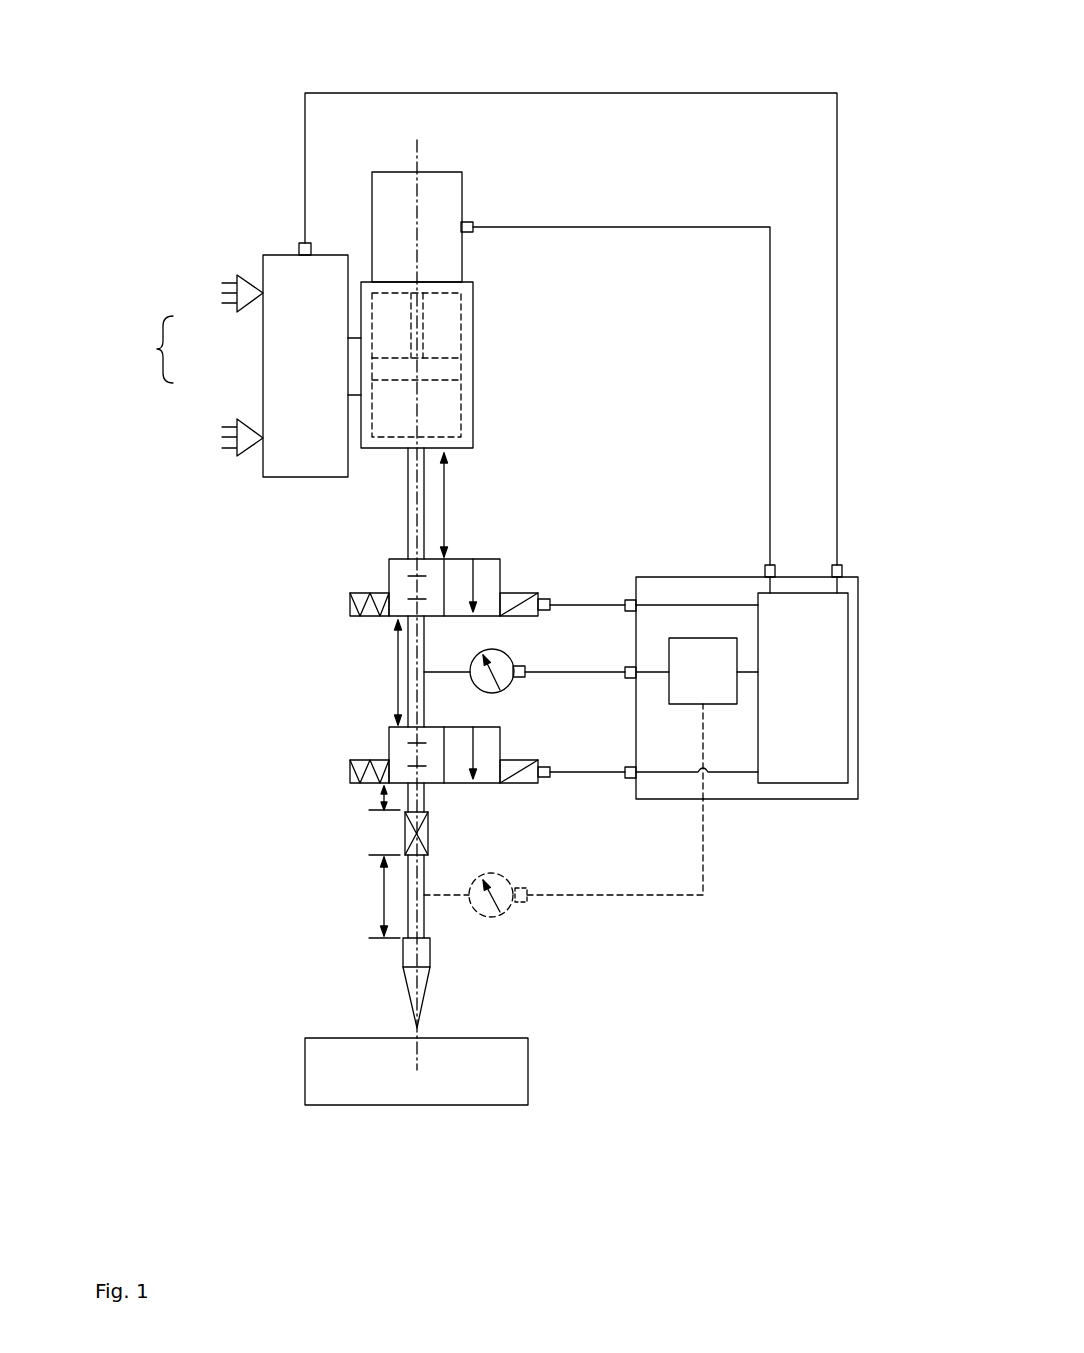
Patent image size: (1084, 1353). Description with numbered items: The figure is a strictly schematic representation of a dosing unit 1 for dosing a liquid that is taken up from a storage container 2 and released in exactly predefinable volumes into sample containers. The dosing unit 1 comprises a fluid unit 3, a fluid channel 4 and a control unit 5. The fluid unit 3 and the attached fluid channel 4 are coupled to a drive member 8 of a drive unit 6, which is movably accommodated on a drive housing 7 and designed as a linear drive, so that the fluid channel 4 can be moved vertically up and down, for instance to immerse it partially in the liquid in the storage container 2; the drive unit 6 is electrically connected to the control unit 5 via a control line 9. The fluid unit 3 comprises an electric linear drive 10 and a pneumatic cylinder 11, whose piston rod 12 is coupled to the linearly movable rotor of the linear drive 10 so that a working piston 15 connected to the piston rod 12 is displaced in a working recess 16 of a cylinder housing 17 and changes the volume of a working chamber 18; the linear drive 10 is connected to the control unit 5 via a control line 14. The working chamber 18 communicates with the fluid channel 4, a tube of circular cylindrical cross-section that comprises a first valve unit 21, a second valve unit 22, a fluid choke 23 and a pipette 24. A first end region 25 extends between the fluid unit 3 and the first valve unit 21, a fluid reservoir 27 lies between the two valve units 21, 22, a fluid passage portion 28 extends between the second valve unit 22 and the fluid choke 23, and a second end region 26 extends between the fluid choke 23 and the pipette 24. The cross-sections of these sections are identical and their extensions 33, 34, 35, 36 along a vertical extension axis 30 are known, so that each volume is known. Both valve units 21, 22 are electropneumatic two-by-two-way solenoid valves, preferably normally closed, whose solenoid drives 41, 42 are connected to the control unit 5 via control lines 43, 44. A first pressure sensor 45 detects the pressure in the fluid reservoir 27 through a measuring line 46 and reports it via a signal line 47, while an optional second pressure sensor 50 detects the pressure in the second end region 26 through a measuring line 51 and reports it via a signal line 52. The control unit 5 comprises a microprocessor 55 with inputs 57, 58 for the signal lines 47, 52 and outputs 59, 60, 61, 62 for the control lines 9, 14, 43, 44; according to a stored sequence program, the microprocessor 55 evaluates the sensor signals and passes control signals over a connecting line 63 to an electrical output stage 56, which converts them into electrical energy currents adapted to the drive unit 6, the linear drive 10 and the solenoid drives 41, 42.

The dosing unit 1 is at (268, 80).
The storage container 2 is at (512, 1082).
The fluid unit 3 is at (487, 265).
The fluid channel 4 is at (478, 525).
The control unit 5 is at (700, 577).
The drive unit 6 is at (155, 349).
The drive housing 7 is at (270, 358).
The drive member 8 is at (354, 350).
The control line 9 is at (702, 93).
The electric linear drive 10 is at (446, 185).
The pneumatic cylinder 11 is at (480, 365).
The piston rod 12 is at (413, 325).
The control line 14 is at (603, 227).
The working piston 15 is at (400, 368).
The working recess 16 is at (385, 418).
The cylinder housing 17 is at (465, 323).
The working chamber 18 is at (440, 412).
The first valve unit 21 is at (379, 575).
The second valve unit 22 is at (379, 742).
The fluid choke 23 is at (410, 833).
The pipette 24 is at (408, 958).
The first end region 25 is at (413, 487).
The second end region 26 is at (415, 912).
The fluid reservoir 27 is at (415, 638).
The fluid passage portion 28 is at (402, 800).
The extension axis 30 is at (418, 1000).
The extension 33 is at (445, 505).
The extension 34 is at (398, 683).
The extension 35 is at (380, 795).
The extension 36 is at (380, 873).
The solenoid drive 41 is at (505, 600).
The solenoid drive 42 is at (510, 765).
The control line 43 is at (582, 605).
The control line 44 is at (575, 780).
The first pressure sensor 45 is at (500, 663).
The measuring line 46 is at (448, 672).
The signal line 47 is at (565, 672).
The second pressure sensor 50 is at (493, 912).
The measuring line 51 is at (445, 893).
The signal line 52 is at (712, 895).
The microprocessor 55 is at (685, 648).
The electrical output stage 56 is at (835, 618).
The input 57 is at (627, 672).
The input 58 is at (705, 805).
The output 59 is at (625, 603).
The output 60 is at (627, 770).
The output 61 is at (765, 570).
The output 62 is at (832, 570).
The connecting line 63 is at (747, 673).